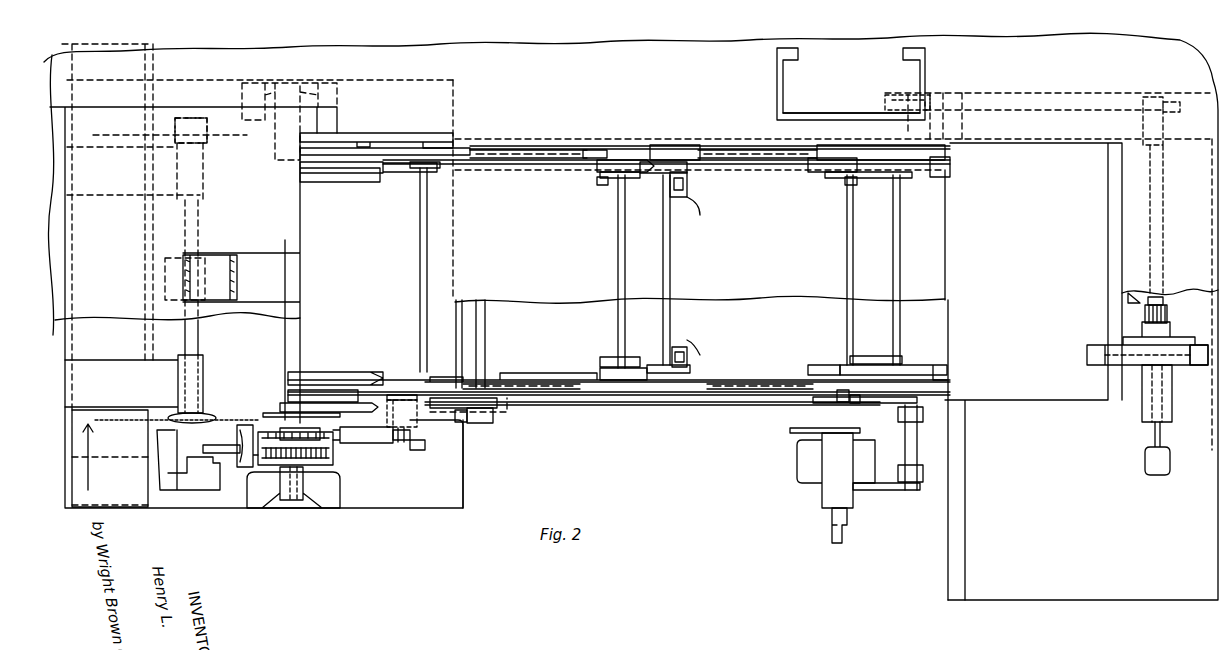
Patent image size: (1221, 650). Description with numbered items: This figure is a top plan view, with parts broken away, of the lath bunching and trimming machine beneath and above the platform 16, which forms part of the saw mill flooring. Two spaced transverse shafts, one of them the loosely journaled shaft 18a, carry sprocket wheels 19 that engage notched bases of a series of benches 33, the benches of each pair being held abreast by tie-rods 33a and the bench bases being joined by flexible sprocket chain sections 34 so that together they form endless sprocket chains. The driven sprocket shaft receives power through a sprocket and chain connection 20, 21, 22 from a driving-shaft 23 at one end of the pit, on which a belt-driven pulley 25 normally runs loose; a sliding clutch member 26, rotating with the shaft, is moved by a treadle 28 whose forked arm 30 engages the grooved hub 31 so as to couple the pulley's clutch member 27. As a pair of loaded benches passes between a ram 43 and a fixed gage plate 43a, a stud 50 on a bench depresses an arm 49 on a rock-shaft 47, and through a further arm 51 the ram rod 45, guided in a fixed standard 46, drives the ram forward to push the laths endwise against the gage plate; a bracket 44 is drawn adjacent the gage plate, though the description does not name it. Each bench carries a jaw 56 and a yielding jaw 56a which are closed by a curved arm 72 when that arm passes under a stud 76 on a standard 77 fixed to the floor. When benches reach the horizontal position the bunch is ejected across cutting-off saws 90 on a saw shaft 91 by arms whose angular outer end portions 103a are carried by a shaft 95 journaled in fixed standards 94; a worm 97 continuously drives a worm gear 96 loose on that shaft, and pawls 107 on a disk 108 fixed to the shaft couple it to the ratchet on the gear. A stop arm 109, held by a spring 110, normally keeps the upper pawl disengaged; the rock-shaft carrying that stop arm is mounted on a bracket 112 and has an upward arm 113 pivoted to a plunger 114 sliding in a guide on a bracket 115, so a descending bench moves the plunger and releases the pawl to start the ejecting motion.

The platform 16 is at (700, 275).
The shaft 18a is at (480, 350).
The sprocket wheels 19 is at (492, 415).
The sprocket and chain connection 20 is at (896, 95).
The sprocket and chain connection 21 is at (1047, 116).
The sprocket and chain connection 22 is at (1180, 112).
The driving-shaft 23 is at (1165, 300).
The pulley 25 is at (1142, 366).
The sliding clutch member 26 is at (1180, 343).
The clutch member 27 is at (1180, 362).
The treadle 28 is at (1155, 434).
The forked arm 30 is at (1145, 315).
The grooved hub 31 is at (1133, 296).
The benches 33 is at (331, 160).
The tie-rods 33a is at (422, 218).
The sprocket chain sections 34 is at (545, 160).
The ram 43 is at (790, 430).
The gage plate 43a is at (826, 119).
The channel bracket 44 is at (790, 95).
The rod 45 is at (848, 518).
The standard 46 is at (815, 470).
The rock-shaft 47 is at (918, 450).
The arm 49 is at (845, 402).
The stud 50 is at (858, 404).
The arm 51 is at (898, 492).
The jaw 56 is at (600, 170).
The jaw 56a is at (343, 175).
The curved arm 72 is at (656, 180).
The stud 76 is at (688, 180).
The standard 77 is at (706, 276).
The cutting-off saws 90 is at (248, 145).
The saw shaft 91 is at (199, 345).
The standards 94 is at (325, 496).
The shaft 95 is at (231, 309).
The worm gear 96 is at (330, 462).
The worm 97 is at (248, 480).
The angular outer end portion 103a is at (357, 147).
The pawls 107 is at (288, 436).
The disk 108 is at (337, 433).
The stop arm 109 is at (342, 416).
The spring 110 is at (418, 436).
The bracket 112 is at (420, 448).
The arm 113 is at (400, 442).
The plunger 114 is at (393, 395).
The bracket 115 is at (462, 422).